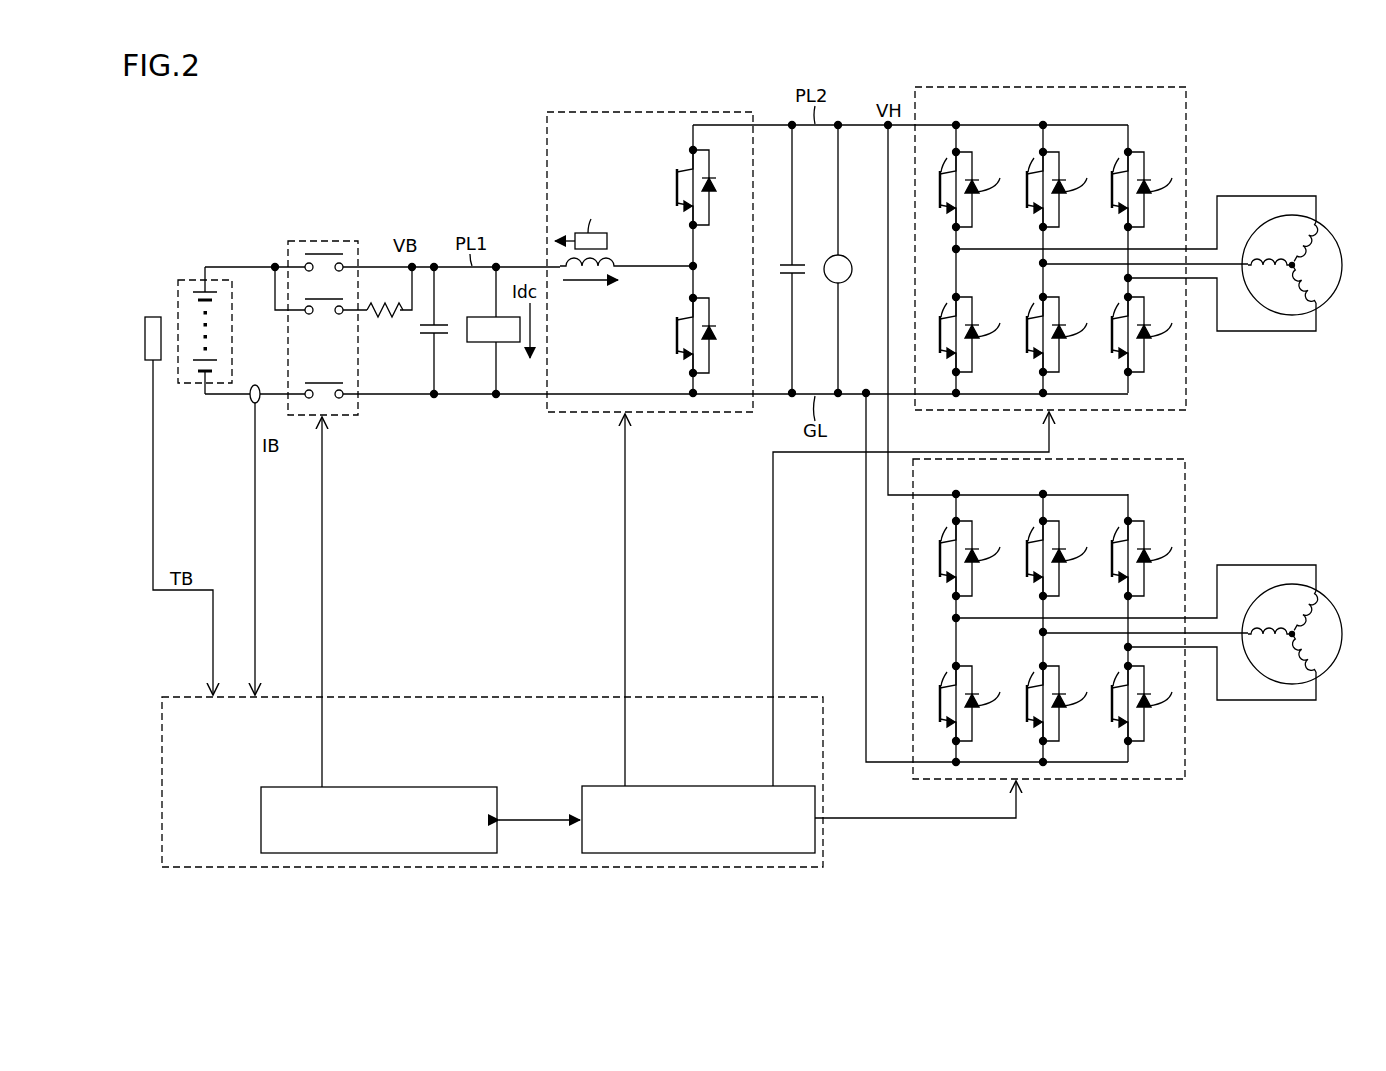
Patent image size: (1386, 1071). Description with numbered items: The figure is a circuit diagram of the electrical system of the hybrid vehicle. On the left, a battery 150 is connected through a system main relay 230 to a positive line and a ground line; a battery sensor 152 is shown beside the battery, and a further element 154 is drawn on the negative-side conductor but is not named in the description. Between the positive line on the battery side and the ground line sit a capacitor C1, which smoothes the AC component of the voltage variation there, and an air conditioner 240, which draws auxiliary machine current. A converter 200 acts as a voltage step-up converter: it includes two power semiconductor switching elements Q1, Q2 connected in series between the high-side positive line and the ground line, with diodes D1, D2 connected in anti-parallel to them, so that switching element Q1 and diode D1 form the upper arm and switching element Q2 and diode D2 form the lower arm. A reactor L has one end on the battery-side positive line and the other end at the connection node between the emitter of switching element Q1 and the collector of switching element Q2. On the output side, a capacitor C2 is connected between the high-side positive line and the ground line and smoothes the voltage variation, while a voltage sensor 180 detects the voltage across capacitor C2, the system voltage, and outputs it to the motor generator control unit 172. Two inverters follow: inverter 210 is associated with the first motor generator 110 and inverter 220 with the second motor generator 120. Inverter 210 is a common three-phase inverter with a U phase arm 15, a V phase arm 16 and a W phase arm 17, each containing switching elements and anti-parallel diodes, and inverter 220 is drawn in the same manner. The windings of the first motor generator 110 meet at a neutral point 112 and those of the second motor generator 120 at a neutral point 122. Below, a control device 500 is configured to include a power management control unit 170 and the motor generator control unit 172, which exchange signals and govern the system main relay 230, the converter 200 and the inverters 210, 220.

The first MG 110 is at (1168, 243).
The neutral point 112 is at (1291, 262).
The second MG 120 is at (1168, 612).
The neutral point 122 is at (1291, 631).
The U phase arm 15 is at (943, 118).
The V phase arm 16 is at (1030, 118).
The W phase arm 17 is at (1115, 118).
The battery 150 is at (190, 280).
The battery sensor 152 is at (150, 317).
The current sensor 154 is at (255, 385).
The PM-ECU 170 is at (440, 787).
The MG-ECU 172 is at (698, 786).
The voltage sensor 180 is at (853, 265).
The converter 200 is at (655, 249).
The inverter 210 is at (1135, 88).
The inverter 220 is at (1133, 461).
The SMR 230 is at (325, 241).
The air conditioner 240 is at (475, 343).
The control device 500 is at (603, 639).
The capacitor C1 is at (441, 323).
The capacitor C2 is at (797, 262).
The reactor L is at (617, 258).
The switching element Q1 is at (679, 171).
The switching element Q2 is at (679, 319).
The diode D1 is at (716, 193).
The diode D2 is at (716, 341).